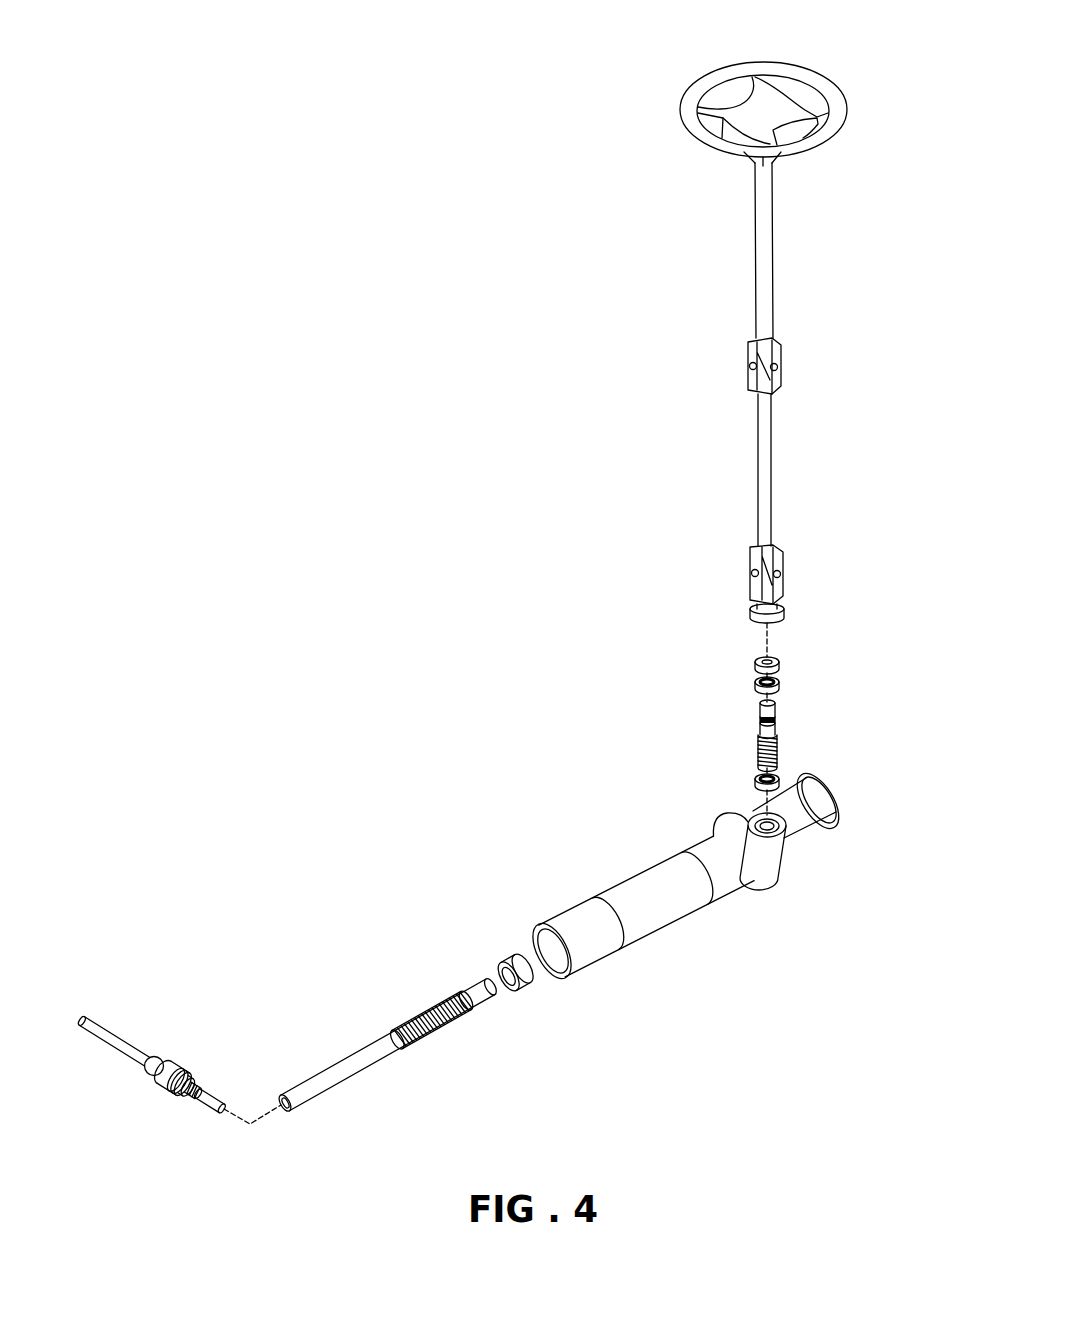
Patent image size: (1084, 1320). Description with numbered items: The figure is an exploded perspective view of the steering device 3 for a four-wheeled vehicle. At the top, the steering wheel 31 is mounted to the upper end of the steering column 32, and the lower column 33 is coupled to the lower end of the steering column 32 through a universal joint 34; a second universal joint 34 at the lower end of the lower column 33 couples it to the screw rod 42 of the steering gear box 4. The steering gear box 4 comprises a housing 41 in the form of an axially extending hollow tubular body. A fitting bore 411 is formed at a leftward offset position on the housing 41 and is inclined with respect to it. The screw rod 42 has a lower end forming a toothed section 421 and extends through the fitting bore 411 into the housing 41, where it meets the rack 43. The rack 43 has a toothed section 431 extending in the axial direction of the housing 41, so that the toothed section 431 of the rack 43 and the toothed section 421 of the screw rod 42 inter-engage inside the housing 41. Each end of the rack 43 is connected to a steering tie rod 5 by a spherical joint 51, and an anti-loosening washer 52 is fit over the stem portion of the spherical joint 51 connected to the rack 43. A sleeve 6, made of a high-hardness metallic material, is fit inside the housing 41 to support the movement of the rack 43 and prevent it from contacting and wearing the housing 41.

The steering device 3 is at (560, 210).
The steering wheel 31 is at (697, 90).
The steering column 32 is at (762, 243).
The lower column 33 is at (764, 464).
The universal joint 34 is at (748, 352).
The steering gear box 4 is at (682, 762).
The housing 41 is at (645, 870).
The fitting bore 411 is at (783, 833).
The screw rod 42 is at (760, 712).
The toothed section 421 is at (758, 750).
The rack 43 is at (332, 1072).
The toothed section 431 is at (413, 1020).
The steering tie rod 5 is at (148, 1038).
The spherical joint 51 is at (165, 1088).
The anti-loosening washer 52 is at (186, 1096).
The sleeve 6 is at (508, 958).